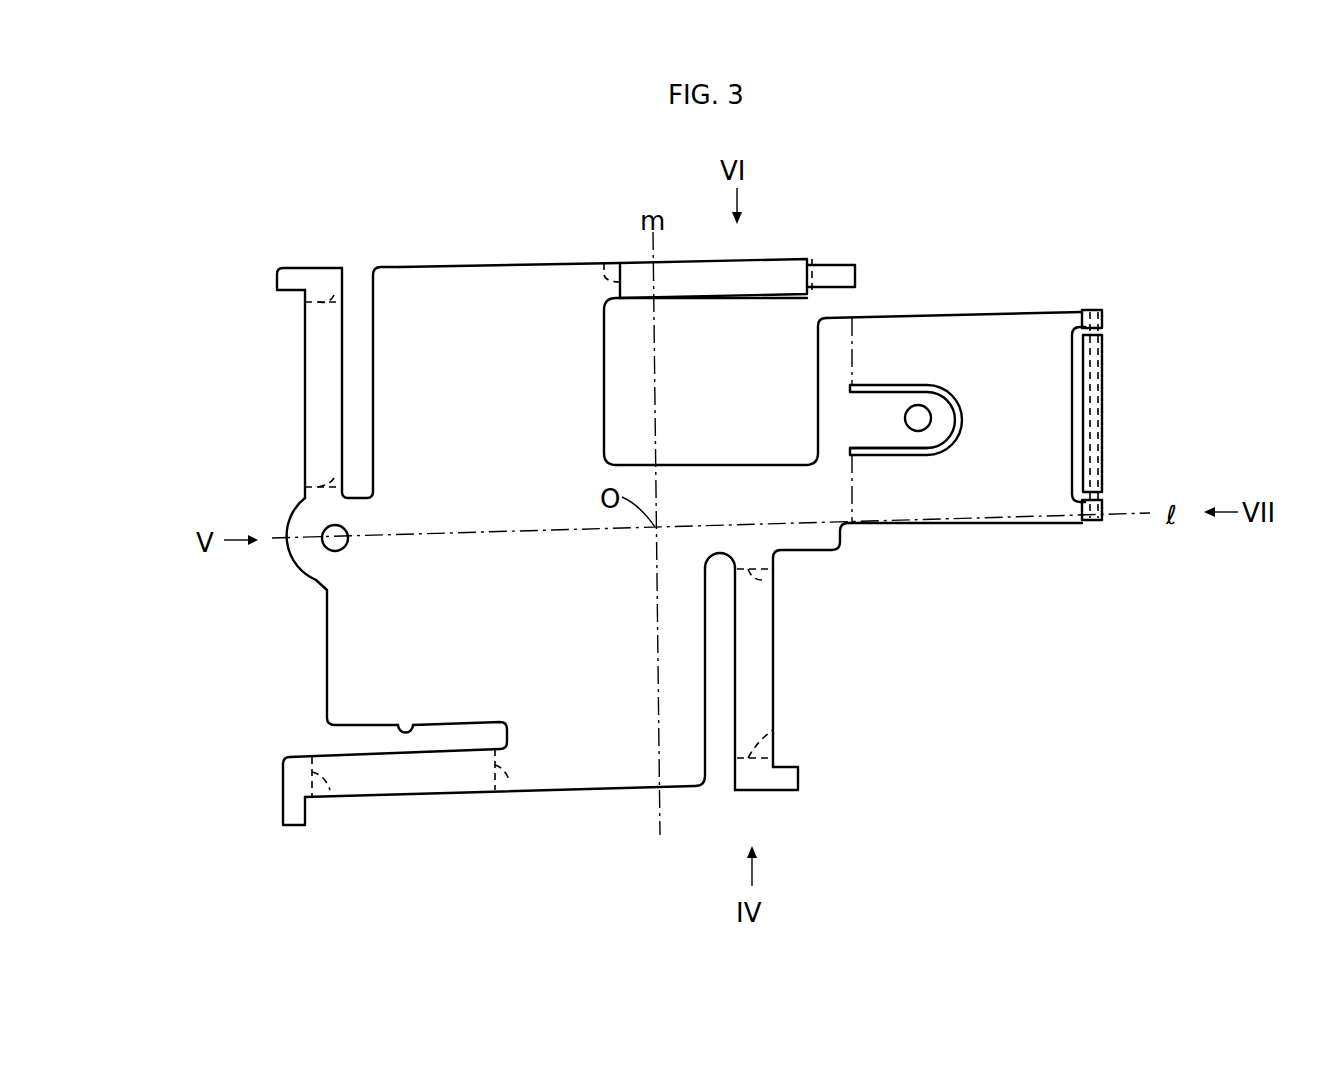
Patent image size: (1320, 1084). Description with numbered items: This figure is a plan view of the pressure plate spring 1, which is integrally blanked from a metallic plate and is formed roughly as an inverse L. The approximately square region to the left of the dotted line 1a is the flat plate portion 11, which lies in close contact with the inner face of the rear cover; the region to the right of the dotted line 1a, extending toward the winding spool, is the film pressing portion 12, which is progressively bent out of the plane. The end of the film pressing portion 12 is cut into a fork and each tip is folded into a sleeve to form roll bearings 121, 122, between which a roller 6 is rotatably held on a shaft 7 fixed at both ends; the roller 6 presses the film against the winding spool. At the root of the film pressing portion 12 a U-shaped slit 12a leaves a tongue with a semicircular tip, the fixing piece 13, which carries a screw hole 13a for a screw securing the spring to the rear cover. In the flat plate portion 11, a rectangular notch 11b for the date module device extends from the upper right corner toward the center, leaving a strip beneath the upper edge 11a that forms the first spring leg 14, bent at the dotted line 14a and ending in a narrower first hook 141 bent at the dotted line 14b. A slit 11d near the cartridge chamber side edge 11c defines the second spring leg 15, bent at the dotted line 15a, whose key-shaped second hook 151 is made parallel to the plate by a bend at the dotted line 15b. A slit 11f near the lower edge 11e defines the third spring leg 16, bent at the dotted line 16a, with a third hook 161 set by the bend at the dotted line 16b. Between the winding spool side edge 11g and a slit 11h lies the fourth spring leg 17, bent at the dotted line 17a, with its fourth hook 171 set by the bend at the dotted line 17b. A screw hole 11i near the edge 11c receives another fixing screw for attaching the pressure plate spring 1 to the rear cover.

The pressure plate spring 1 is at (518, 242).
The dotted line 1a is at (855, 340).
The roller 6 is at (1102, 390).
The shaft 7 is at (1102, 334).
The flat plate portion 11 is at (720, 486).
The upper edge 11a is at (560, 262).
The rectangular notch 11b is at (676, 465).
The cartridge chamber side edge 11c is at (327, 656).
The slit 11d is at (368, 382).
The lower edge 11e is at (590, 790).
The slit 11f is at (410, 725).
The winding spool side edge 11g is at (770, 622).
The slit 11h is at (707, 633).
The screw hole 11i is at (330, 546).
The film pressing portion 12 is at (968, 342).
The U-shaped slit 12a is at (878, 447).
The fixing piece 13 is at (925, 385).
The screw hole 13a is at (918, 430).
The first spring leg 14 is at (740, 272).
The dotted line 14a is at (611, 262).
The dotted line 14b is at (813, 262).
The first hook 141 is at (840, 275).
The second spring leg 15 is at (320, 388).
The dotted line 15a is at (305, 478).
The dotted line 15b is at (305, 308).
The second hook 151 is at (283, 268).
The third spring leg 16 is at (423, 778).
The dotted line 16a is at (510, 792).
The dotted line 16b is at (330, 798).
The third hook 161 is at (298, 826).
The fourth spring leg 17 is at (760, 660).
The dotted line 17a is at (773, 576).
The dotted line 17b is at (776, 736).
The fourth hook 171 is at (790, 778).
The roll bearing 121 is at (1102, 318).
The roll bearing 122 is at (1102, 506).